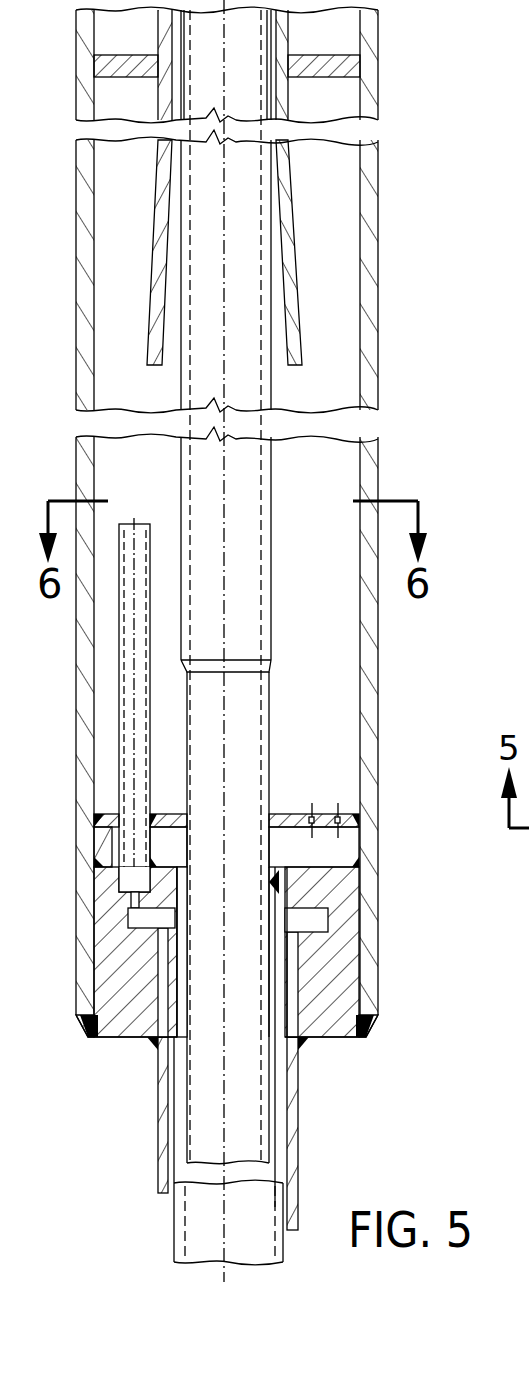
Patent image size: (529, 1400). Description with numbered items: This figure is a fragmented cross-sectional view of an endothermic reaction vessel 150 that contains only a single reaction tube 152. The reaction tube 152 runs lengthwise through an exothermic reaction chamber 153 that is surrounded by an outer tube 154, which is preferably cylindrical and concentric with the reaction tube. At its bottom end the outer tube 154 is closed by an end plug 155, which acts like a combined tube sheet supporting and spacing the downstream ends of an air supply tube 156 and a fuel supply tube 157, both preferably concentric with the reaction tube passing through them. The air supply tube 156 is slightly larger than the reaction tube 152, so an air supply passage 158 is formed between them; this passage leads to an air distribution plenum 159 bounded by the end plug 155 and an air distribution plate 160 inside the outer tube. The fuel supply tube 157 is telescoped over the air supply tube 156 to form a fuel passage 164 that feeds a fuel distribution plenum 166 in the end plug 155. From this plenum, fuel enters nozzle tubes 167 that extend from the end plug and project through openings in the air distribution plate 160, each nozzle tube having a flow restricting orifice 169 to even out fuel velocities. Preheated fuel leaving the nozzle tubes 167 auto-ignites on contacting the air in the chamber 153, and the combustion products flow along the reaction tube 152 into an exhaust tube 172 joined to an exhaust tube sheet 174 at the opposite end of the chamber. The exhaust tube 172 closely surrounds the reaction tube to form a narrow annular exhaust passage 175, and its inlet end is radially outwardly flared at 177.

The endothermic reaction vessel 150 is at (422, 378).
The reaction tube 152 is at (271, 505).
The exothermic reaction chamber 153 is at (340, 463).
The outer tube 154 is at (370, 618).
The end plug 155 is at (338, 1030).
The air supply tube 156 is at (280, 1090).
The fuel supply tube 157 is at (165, 1125).
The air supply passage 158 is at (270, 1132).
The air distribution plenum 159 is at (338, 849).
The air distribution plate 160 is at (283, 817).
The fuel passage 164 is at (173, 1170).
The fuel distribution plenum 166 is at (320, 920).
The nozzle tube 167 is at (187, 710).
The flow restricting orifice 169 is at (130, 903).
The exhaust tube 172 is at (312, 300).
The exhaust tube sheet 174 is at (333, 67).
The annular exhaust passage 175 is at (175, 108).
The radially outwardly flared inlet end 177 is at (150, 318).